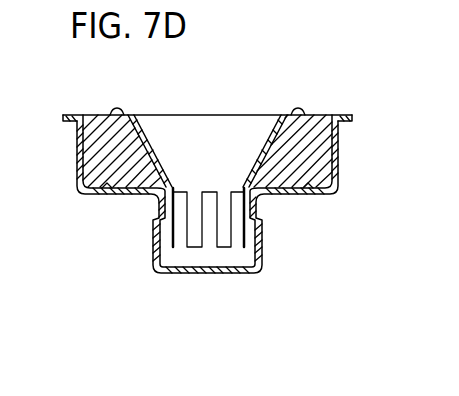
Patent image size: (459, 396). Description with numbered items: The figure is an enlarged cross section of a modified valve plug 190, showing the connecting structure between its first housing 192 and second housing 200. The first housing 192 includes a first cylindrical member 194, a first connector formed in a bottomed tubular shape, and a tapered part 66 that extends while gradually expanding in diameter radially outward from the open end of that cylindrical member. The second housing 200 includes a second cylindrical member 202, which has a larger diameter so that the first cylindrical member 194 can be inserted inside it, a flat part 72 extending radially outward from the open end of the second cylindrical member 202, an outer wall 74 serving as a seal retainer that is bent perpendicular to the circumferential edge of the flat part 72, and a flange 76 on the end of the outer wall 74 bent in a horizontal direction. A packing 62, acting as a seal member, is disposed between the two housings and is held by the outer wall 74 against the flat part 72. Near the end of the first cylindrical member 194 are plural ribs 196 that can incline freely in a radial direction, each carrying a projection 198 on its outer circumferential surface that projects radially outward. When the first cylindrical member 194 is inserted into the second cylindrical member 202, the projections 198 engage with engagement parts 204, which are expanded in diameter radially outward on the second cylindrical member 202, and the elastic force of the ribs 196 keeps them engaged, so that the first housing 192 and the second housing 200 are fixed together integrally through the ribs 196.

The packing 62 is at (318, 155).
The tapered part 66 is at (270, 143).
The flat part 72 is at (308, 195).
The outer wall 74 is at (78, 153).
The flange 76 is at (67, 113).
The valve plug 190 is at (313, 106).
The first housing 192 is at (161, 152).
The first cylindrical member 194 is at (226, 211).
The ribs 196 is at (225, 238).
The projections 198 is at (250, 233).
The second housing 200 is at (90, 198).
The second cylindrical member 202 is at (228, 272).
The engagement parts 204 is at (176, 245).